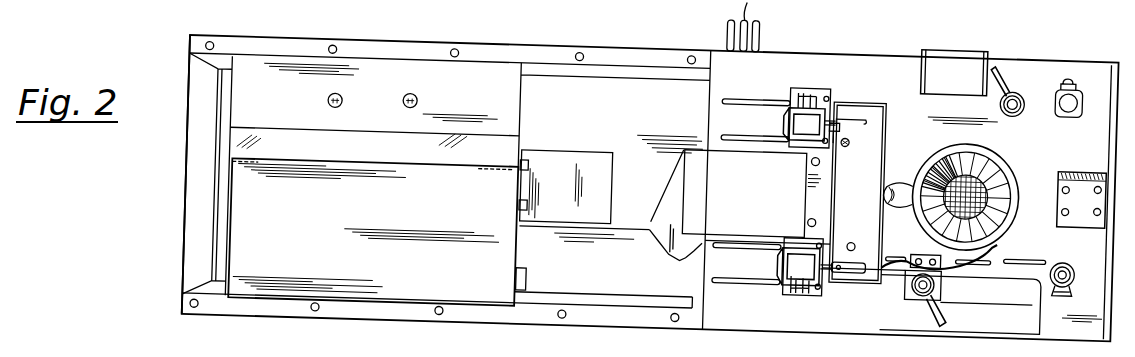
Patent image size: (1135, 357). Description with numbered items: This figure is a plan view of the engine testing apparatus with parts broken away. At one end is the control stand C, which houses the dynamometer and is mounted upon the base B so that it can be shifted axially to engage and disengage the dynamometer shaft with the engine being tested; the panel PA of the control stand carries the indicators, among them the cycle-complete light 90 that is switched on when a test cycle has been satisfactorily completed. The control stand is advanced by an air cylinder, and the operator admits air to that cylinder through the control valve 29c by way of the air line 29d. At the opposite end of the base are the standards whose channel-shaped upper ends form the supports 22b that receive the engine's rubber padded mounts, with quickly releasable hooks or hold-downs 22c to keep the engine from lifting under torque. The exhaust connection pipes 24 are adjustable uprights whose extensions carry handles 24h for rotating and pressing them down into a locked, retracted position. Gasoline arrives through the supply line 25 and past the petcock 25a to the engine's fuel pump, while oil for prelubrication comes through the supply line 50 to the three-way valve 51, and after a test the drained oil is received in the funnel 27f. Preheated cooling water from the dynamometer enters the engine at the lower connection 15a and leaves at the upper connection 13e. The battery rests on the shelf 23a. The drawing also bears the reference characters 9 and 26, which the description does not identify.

The base B is at (190, 241).
The panel PA is at (300, 128).
The control stand C is at (315, 216).
The cycle-complete light 90 is at (330, 93).
The indicator 9 is at (419, 93).
The control valve 29c is at (537, 271).
The air line 29d is at (728, 14).
The supply line 50 is at (760, 7).
The channel support 22b is at (790, 108).
The hooks or hold-downs 22c is at (814, 70).
The shelf 23a is at (872, 178).
The gasoline supply line 25 is at (851, 114).
The petcock 25a is at (840, 115).
The three-way valve 51 is at (846, 247).
The funnel 27f is at (1000, 150).
The exhaust connection pipe 24 is at (1027, 72).
The handle 24h is at (1005, 38).
The lower connection 15a is at (1080, 83).
The upper connection 13e is at (1077, 238).
The flexible cable 26 is at (988, 250).